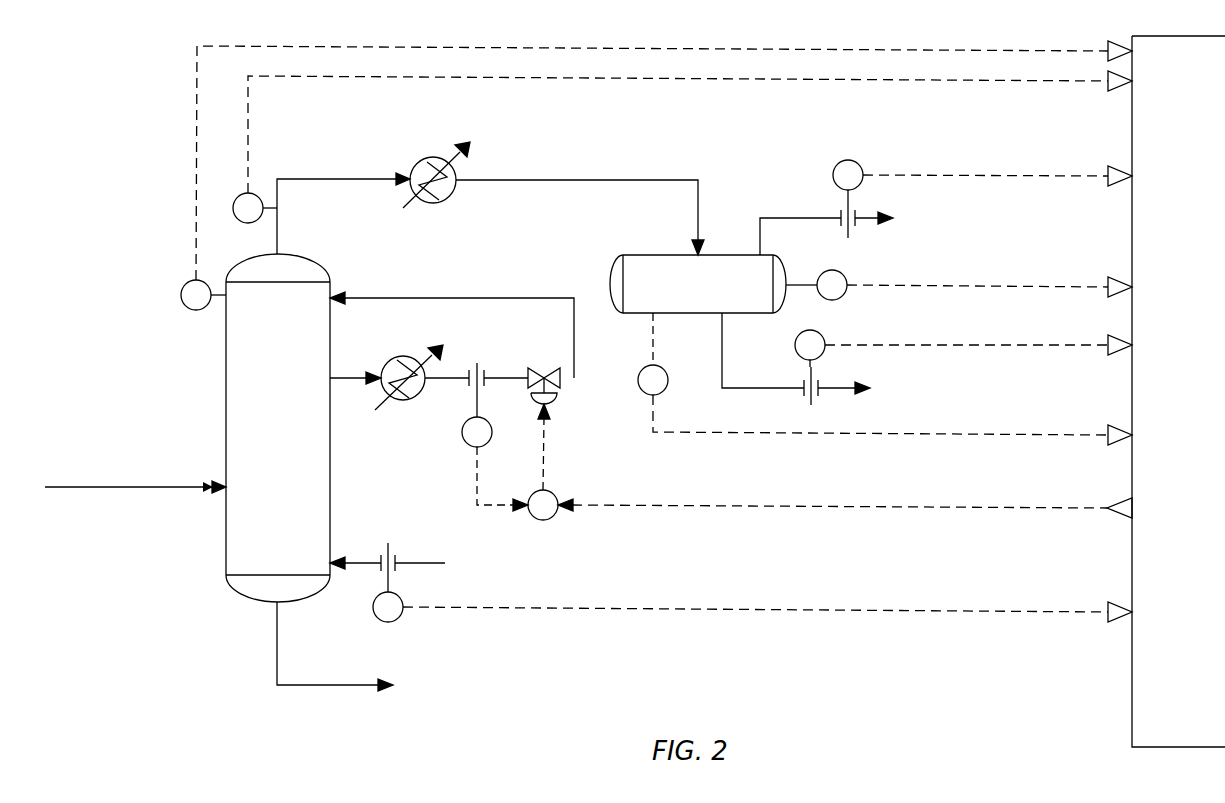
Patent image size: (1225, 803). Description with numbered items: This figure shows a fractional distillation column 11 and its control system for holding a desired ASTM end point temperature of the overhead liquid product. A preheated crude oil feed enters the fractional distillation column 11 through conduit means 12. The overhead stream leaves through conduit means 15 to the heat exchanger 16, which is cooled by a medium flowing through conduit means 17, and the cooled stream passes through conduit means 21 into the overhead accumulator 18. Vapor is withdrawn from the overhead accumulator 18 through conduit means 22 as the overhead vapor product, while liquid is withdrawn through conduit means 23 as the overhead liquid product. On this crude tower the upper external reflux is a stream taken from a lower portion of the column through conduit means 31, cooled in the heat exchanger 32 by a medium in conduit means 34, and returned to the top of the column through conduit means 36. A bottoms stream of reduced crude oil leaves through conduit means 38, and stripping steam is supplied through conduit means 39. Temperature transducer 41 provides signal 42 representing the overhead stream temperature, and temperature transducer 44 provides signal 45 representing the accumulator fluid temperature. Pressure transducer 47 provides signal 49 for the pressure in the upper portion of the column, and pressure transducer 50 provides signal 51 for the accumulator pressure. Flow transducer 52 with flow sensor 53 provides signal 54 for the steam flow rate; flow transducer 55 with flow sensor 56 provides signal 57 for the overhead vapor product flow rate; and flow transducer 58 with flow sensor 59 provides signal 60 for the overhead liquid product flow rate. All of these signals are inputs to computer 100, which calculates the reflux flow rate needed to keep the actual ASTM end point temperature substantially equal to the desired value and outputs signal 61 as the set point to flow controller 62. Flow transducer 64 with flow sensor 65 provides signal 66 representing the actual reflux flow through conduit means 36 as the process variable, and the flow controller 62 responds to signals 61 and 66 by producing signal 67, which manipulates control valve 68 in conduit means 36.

The fractional distillation column 11 is at (226, 386).
The conduit means 12 is at (153, 487).
The conduit means 15 is at (337, 179).
The heat exchanger 16 is at (432, 157).
The conduit means 17 is at (416, 206).
The overhead accumulator 18 is at (653, 255).
The conduit means 21 is at (612, 180).
The conduit means 22 is at (772, 218).
The conduit means 23 is at (722, 390).
The conduit means 31 is at (360, 387).
The heat exchanger 32 is at (404, 357).
The conduit means 34 is at (392, 400).
The conduit means 36 is at (520, 298).
The conduit means 38 is at (345, 688).
The conduit means 39 is at (428, 563).
The temperature transducer 41 is at (244, 223).
The output signal 42 is at (750, 80).
The temperature transducer 44 is at (638, 370).
The output signal 45 is at (780, 435).
The pressure transducer 47 is at (181, 295).
The output signal 49 is at (197, 150).
The pressure transducer 50 is at (844, 297).
The output signal 51 is at (1083, 287).
The flow transducer 52 is at (380, 622).
The flow sensor 53 is at (381, 556).
The output signal 54 is at (722, 608).
The flow transducer 55 is at (847, 160).
The flow sensor 56 is at (841, 215).
The output signal 57 is at (998, 176).
The flow transducer 58 is at (795, 345).
The flow sensor 59 is at (804, 398).
The output signal 60 is at (1000, 345).
The signal 61 is at (935, 510).
The flow controller 62 is at (545, 522).
The flow transducer 64 is at (462, 432).
The flow sensor 65 is at (484, 370).
The output signal 66 is at (477, 468).
The output signal 67 is at (545, 455).
The control valve 68 is at (560, 393).
The computer 100 is at (1130, 692).